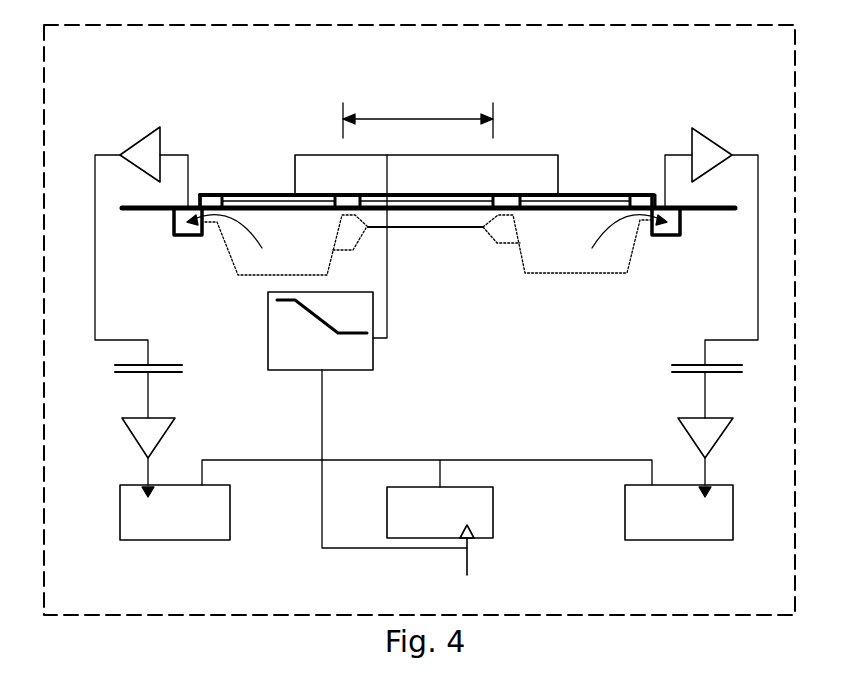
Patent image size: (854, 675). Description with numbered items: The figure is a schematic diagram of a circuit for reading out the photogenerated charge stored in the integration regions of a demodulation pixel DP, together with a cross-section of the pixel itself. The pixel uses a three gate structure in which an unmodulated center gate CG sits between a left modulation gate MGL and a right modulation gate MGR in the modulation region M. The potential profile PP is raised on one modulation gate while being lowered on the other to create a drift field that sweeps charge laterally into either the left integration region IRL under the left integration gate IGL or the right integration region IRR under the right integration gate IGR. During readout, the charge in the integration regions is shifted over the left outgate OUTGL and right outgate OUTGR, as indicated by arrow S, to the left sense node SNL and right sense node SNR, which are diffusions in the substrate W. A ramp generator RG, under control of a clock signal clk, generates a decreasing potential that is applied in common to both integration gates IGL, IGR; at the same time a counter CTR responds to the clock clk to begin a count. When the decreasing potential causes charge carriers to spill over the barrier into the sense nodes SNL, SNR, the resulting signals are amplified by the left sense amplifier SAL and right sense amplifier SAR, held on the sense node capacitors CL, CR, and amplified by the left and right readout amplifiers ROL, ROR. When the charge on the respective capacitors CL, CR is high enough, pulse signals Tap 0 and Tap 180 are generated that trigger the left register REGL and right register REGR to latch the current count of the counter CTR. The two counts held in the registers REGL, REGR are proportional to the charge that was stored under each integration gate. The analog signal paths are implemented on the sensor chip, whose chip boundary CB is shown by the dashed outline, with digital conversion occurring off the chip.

The chip boundary CB is at (560, 603).
The left sense amplifier SAL is at (131, 148).
The right sense amplifier SAR is at (720, 141).
The left sense node capacitor CL is at (163, 377).
The right sense node capacitor CR is at (688, 377).
The left readout amplifier ROL is at (174, 422).
The right readout amplifier ROR is at (687, 432).
The tap0 pulse signal Tap 0 is at (147, 466).
The tap 180 pulse signal Tap 180 is at (706, 461).
The left register REGL is at (175, 512).
The right register REGR is at (679, 512).
The counter CTR is at (440, 512).
The clock signal clk is at (482, 550).
The ramp generator RG is at (268, 330).
The center gate CG is at (441, 194).
The left integration gate IGL is at (267, 193).
The left modulation gate MGL is at (335, 195).
The right modulation gate MGR is at (503, 195).
The right integration gate IGR is at (583, 195).
The left sense node SNL is at (181, 237).
The right sense node SNR is at (660, 236).
The left outgate OUTGL is at (203, 200).
The right outgate OUTGR is at (647, 194).
The substrate W is at (425, 220).
The potential profile PP is at (481, 228).
The left integration region IRL is at (260, 268).
The right integration region IRR is at (545, 262).
The arrow S is at (245, 227).
The modulation region M is at (420, 119).
The demodulation pixel DP is at (527, 94).